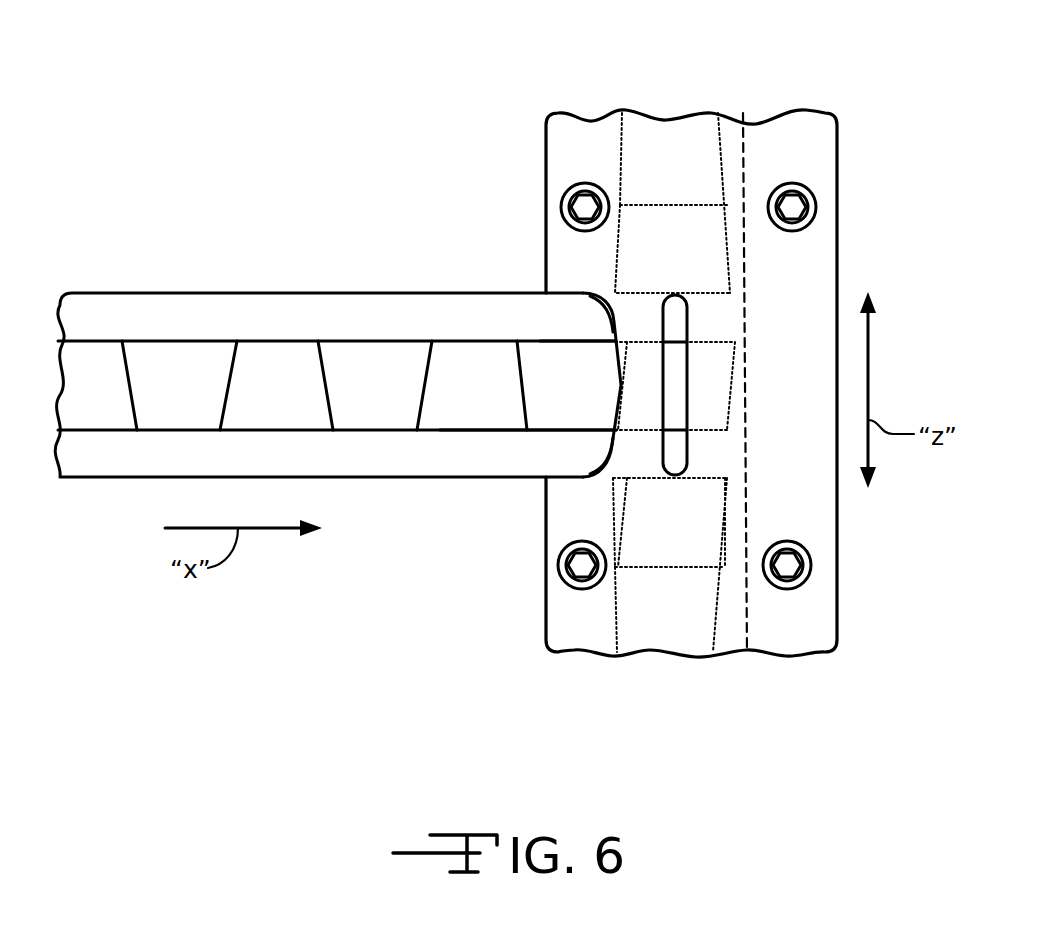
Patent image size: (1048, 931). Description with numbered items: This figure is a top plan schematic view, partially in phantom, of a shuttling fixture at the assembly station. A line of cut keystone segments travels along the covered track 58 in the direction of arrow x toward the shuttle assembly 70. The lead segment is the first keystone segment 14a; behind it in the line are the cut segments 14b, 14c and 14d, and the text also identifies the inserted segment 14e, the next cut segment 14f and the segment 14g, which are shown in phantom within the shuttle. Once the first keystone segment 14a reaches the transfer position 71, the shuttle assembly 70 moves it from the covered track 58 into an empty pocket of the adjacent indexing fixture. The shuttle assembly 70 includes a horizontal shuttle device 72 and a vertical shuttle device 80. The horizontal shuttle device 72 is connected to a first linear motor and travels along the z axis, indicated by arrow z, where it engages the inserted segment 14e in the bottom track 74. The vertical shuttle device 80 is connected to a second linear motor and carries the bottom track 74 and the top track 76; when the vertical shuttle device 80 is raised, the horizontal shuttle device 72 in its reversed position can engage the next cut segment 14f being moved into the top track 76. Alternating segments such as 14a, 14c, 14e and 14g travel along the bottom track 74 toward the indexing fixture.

The covered track 58 is at (308, 293).
The shuttle assembly 70 is at (885, 137).
The transfer position 71 is at (748, 427).
The horizontal shuttle device 72 is at (688, 453).
The bottom track 74 is at (620, 153).
The top track 76 is at (747, 652).
The vertical shuttle device 80 is at (834, 630).
The first keystone segment 14a is at (605, 113).
The cut segment 14b is at (592, 650).
The cut segment 14c is at (620, 243).
The cut segment 14d is at (608, 510).
The inserted segment 14e is at (745, 340).
The next cut segment 14f is at (550, 341).
The cut segment 14g is at (440, 430).